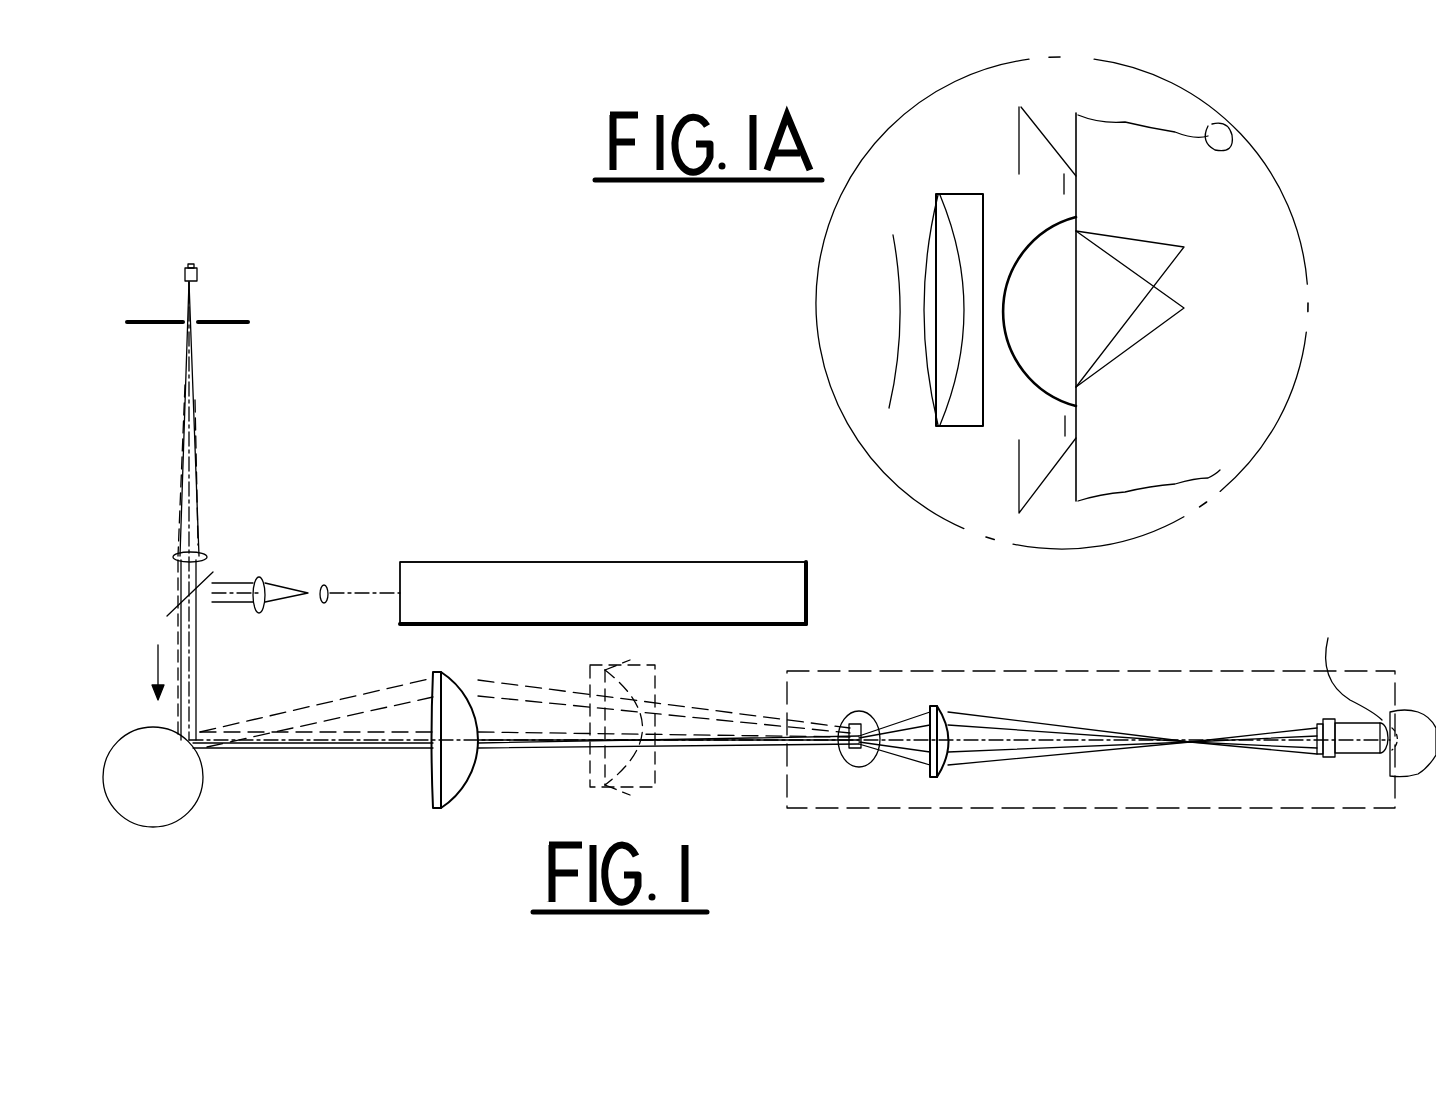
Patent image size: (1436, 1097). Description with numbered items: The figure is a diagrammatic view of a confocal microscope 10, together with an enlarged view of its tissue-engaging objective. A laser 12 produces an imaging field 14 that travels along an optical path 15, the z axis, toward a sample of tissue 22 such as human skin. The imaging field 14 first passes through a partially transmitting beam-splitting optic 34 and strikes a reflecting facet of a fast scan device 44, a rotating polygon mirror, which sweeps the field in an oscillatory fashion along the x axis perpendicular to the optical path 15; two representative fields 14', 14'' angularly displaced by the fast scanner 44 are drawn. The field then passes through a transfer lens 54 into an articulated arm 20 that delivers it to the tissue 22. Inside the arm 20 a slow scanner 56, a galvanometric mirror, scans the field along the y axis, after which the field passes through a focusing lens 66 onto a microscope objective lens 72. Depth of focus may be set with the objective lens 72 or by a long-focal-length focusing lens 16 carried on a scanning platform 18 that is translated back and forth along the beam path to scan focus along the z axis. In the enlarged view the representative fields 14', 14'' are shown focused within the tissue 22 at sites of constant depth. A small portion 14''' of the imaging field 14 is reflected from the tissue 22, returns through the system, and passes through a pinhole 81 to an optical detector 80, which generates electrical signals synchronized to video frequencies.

In FIG. 1, the confocal microscope 10 is at (546, 512).
In FIG. 1, the laser 12 is at (505, 562).
In FIG. 1, the imaging field 14 is at (288, 567).
In FIG. 1, the representative field 14' is at (526, 775).
In FIG. 1A, the representative field 14' is at (1135, 318).
In FIG. 1, the representative field 14'' is at (525, 695).
In FIG. 1A, the representative field 14'' is at (1130, 285).
In FIG. 1, the reflected portion of the imaging field 14''' is at (243, 511).
In FIG. 1, the optical path 15 is at (157, 663).
In FIG. 1, the focusing lens 16 is at (592, 676).
In FIG. 1, the scanning platform 18 is at (655, 672).
In FIG. 1, the articulated arm 20 is at (1145, 808).
In FIG. 1, the tissue 22 is at (1412, 778).
In FIG. 1A, the tissue 22 is at (1232, 126).
In FIG. 1, the beam-splitting optic 34 is at (181, 600).
In FIG. 1, the fast scan device 44 is at (200, 790).
In FIG. 1, the transfer lens 54 is at (475, 783).
In FIG. 1, the slow scanner 56 is at (855, 768).
In FIG. 1, the focusing lens 66 is at (948, 710).
In FIG. 1, the microscope objective lens 72 is at (1350, 757).
In FIG. 1A, the microscope objective lens 72 is at (1056, 116).
In FIG. 1, the optical detector 80 is at (193, 266).
In FIG. 1, the pinhole 81 is at (200, 321).